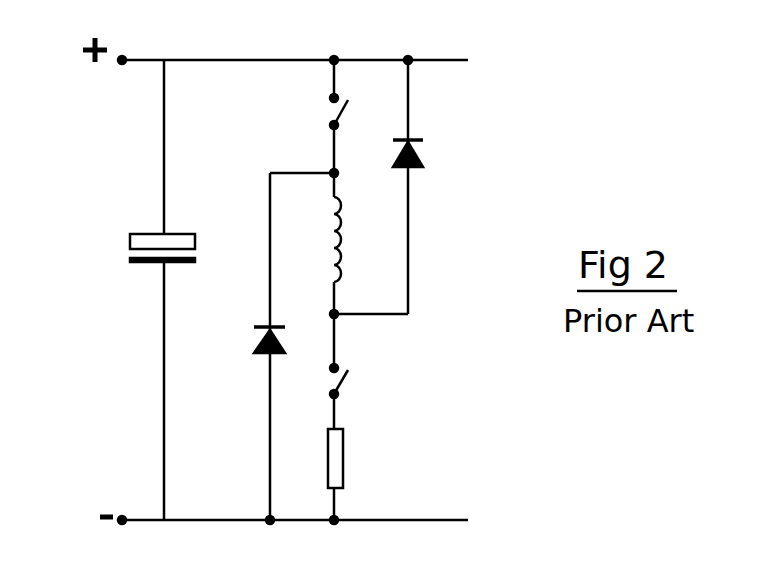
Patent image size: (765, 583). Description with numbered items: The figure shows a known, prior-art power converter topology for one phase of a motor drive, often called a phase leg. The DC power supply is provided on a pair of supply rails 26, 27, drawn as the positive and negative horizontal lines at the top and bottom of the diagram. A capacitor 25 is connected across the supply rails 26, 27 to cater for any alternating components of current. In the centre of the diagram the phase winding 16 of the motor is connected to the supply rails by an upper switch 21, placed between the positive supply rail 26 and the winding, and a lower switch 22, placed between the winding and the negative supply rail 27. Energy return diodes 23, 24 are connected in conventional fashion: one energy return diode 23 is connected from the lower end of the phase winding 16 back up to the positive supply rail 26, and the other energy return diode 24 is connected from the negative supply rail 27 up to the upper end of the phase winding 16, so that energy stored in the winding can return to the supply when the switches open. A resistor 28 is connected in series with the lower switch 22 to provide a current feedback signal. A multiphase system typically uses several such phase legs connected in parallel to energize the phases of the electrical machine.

The phase winding 16 is at (350, 218).
The upper switch 21 is at (331, 113).
The lower switch 22 is at (350, 383).
The energy return diode 23 is at (427, 147).
The energy return diode 24 is at (252, 333).
The capacitor 25 is at (128, 250).
The supply rail 26 is at (242, 60).
The supply rail 27 is at (223, 522).
The resistor 28 is at (345, 458).